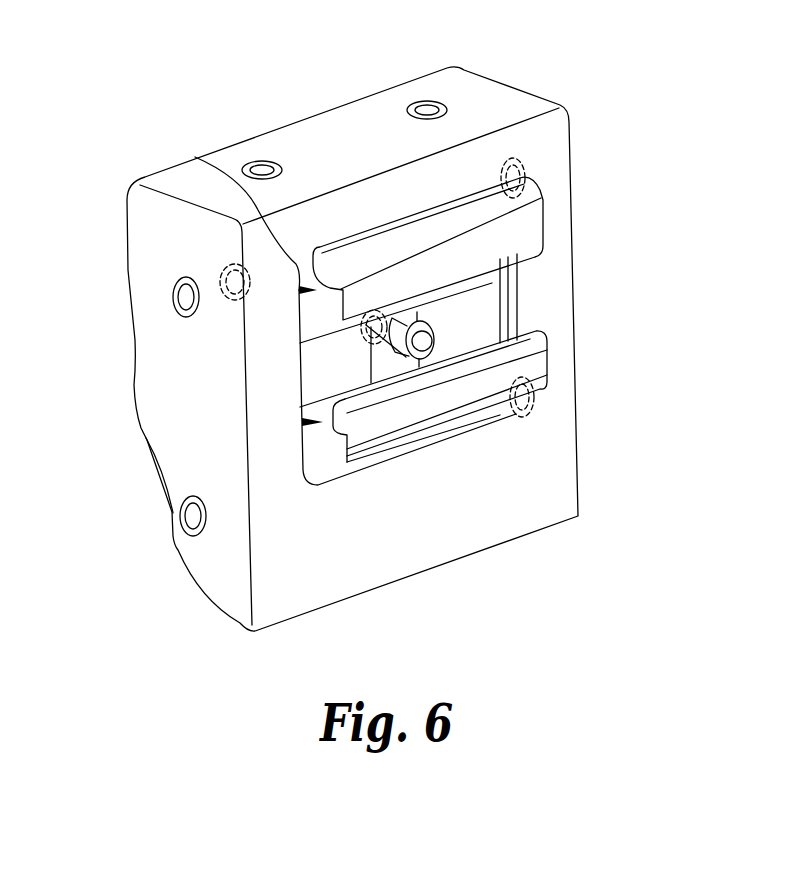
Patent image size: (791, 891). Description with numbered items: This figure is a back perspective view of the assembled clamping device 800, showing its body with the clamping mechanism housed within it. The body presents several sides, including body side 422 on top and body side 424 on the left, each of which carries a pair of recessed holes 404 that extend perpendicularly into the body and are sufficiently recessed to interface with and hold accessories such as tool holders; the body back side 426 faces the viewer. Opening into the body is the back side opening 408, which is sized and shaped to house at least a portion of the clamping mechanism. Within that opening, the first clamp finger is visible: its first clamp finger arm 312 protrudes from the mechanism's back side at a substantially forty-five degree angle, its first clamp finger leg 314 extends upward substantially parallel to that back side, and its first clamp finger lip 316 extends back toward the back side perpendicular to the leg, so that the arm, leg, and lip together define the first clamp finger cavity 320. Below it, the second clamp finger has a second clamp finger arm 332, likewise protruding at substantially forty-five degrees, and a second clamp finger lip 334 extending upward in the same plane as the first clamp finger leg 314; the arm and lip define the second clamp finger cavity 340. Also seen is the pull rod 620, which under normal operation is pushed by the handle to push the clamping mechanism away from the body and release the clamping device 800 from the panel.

The clamping device 800 is at (521, 62).
The body side 422 is at (318, 140).
The recessed holes 404 is at (260, 167).
The first clamp finger lip 316 is at (197, 160).
The first clamp finger leg 314 is at (532, 227).
The back side opening 408 is at (508, 305).
The second clamp finger lip 334 is at (530, 360).
The body back side 426 is at (520, 480).
The second clamp finger arm 332 is at (323, 450).
The second clamp finger cavity 340 is at (303, 422).
The first clamp finger arm 312 is at (313, 313).
The first clamp finger cavity 320 is at (298, 290).
The pull rod 620 is at (381, 348).
The body side 424 is at (155, 397).